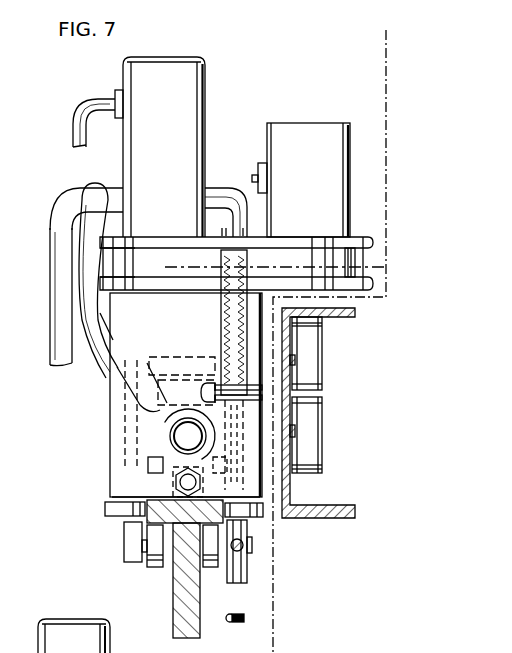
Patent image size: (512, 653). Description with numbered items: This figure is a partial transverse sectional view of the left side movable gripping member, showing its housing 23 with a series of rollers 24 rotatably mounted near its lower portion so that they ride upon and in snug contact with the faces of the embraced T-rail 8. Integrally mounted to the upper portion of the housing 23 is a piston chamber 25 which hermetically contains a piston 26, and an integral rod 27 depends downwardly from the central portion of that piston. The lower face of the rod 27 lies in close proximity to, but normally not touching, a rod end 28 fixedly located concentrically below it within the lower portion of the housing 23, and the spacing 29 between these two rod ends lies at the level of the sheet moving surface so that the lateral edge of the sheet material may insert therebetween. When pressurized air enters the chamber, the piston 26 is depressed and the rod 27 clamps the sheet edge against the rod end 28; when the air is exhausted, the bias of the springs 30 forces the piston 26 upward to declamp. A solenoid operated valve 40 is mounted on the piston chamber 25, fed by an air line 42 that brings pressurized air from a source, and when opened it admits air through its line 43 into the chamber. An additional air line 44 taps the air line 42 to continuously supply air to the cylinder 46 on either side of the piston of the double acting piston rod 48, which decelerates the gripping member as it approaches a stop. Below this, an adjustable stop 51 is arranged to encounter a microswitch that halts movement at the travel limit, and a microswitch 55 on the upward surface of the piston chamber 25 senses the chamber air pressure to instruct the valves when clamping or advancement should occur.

The T-rail 8 is at (398, 55).
The housing 23 is at (110, 413).
The rollers 24 is at (150, 462).
The piston chamber 25 is at (363, 237).
The piston 26 is at (325, 258).
The rod 27 is at (222, 362).
The rod end 28 is at (250, 398).
The spacing 29 is at (233, 392).
The springs 30 is at (221, 300).
The solenoid operated valve 40 is at (206, 72).
The air line 42 is at (53, 252).
The line 43 is at (213, 190).
The air line 44 is at (100, 366).
The cylinder 46 is at (165, 429).
The double acting piston rod 48 is at (174, 438).
The adjustable stop 51 is at (182, 483).
The microswitch 55 is at (312, 122).